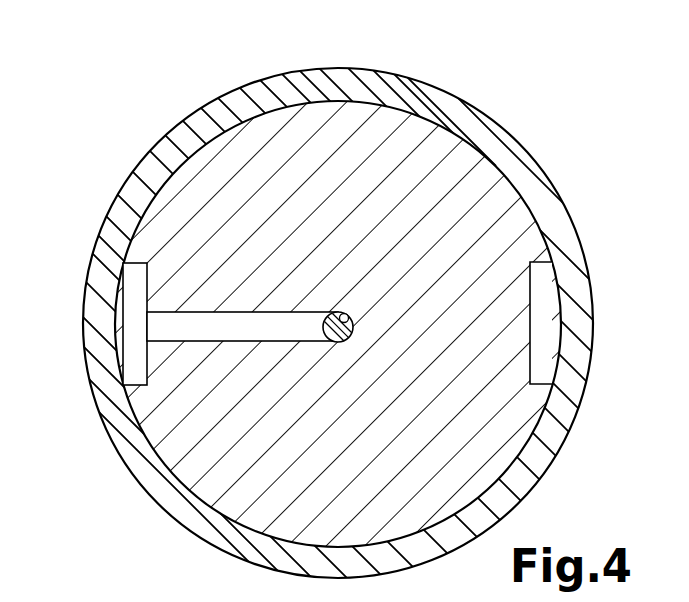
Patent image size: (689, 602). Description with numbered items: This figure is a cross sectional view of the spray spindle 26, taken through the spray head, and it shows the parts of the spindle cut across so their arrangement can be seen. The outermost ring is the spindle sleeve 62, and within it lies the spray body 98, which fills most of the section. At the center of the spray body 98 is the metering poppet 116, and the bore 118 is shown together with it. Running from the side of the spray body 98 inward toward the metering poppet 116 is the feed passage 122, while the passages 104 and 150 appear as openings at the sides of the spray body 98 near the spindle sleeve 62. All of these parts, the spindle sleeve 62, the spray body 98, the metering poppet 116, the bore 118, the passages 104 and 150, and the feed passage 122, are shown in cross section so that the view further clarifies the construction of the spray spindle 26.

The spray spindle 26 is at (516, 124).
The spindle sleeve 62 is at (340, 67).
The spray body 98 is at (259, 138).
The passage 150 is at (121, 311).
The passage 104 is at (549, 313).
The feed passage 122 is at (177, 341).
The metering poppet 116 is at (353, 337).
The bore 118 is at (346, 313).